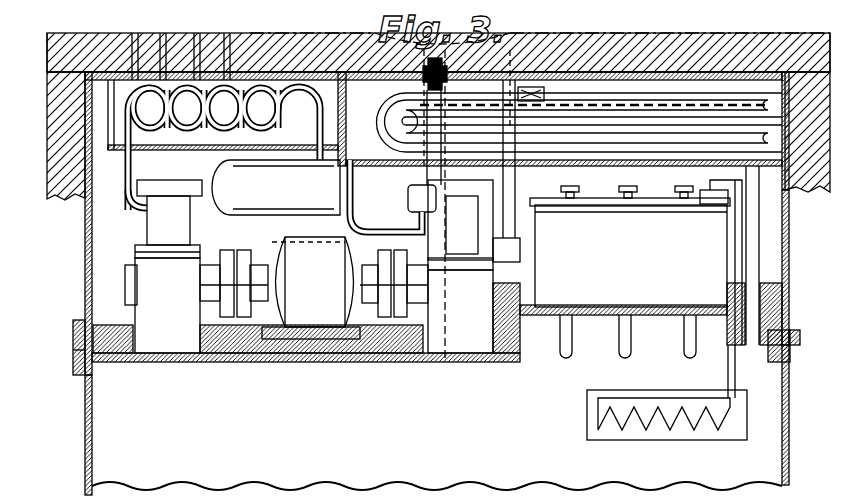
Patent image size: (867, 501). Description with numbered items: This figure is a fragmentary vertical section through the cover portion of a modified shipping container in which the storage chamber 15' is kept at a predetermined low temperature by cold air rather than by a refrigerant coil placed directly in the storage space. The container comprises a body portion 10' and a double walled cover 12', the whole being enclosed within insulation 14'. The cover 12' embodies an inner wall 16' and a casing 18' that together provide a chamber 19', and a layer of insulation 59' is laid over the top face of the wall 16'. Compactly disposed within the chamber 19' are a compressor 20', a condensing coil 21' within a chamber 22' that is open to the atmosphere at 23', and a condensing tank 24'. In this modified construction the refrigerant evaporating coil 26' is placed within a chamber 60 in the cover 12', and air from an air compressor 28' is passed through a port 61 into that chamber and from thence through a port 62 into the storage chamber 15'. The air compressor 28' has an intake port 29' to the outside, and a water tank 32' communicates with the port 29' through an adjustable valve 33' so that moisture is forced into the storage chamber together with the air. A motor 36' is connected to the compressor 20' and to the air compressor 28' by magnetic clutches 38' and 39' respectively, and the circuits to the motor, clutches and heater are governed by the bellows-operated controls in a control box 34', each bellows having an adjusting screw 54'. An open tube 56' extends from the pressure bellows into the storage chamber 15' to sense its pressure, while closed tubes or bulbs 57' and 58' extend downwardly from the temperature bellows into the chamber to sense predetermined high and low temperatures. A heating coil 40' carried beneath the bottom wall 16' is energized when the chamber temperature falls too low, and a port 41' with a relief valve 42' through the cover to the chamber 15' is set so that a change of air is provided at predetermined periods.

The body portion 10' is at (65, 435).
The double walled cover 12' is at (66, 223).
The insulation 14' is at (438, 104).
The storage chamber 15' is at (437, 469).
The inner wall 16' is at (409, 339).
The casing 18' is at (140, 44).
The cover chamber 19' is at (189, 179).
The compressor 20' is at (163, 266).
The condensing coil 21' is at (224, 127).
The condensing coil chamber 22' is at (550, 105).
The atmospheric opening 23' is at (203, 44).
The condensing tank 24' is at (276, 187).
The refrigerant evaporating coil 26' is at (580, 80).
The air compressor 28' is at (474, 216).
The intake port 29' is at (528, 87).
The water tank 32' is at (627, 183).
The adjustable valve 33' is at (594, 77).
The control box 34' is at (630, 252).
The motor 36' is at (311, 288).
The magnetic clutch 38' is at (234, 323).
The magnetic clutch 39' is at (394, 323).
The heating coil 40' is at (667, 433).
The port 41' is at (464, 223).
The relief valve 42' is at (458, 115).
The adjusting screw 54' is at (688, 281).
The open tube 56' is at (582, 336).
The closed tube or bulb 57' is at (642, 336).
The closed tube or bulb 58' is at (705, 336).
The layer of insulation 59' is at (430, 329).
The coil chamber 60 is at (692, 88).
The port 61 is at (393, 200).
The port 62 is at (755, 256).